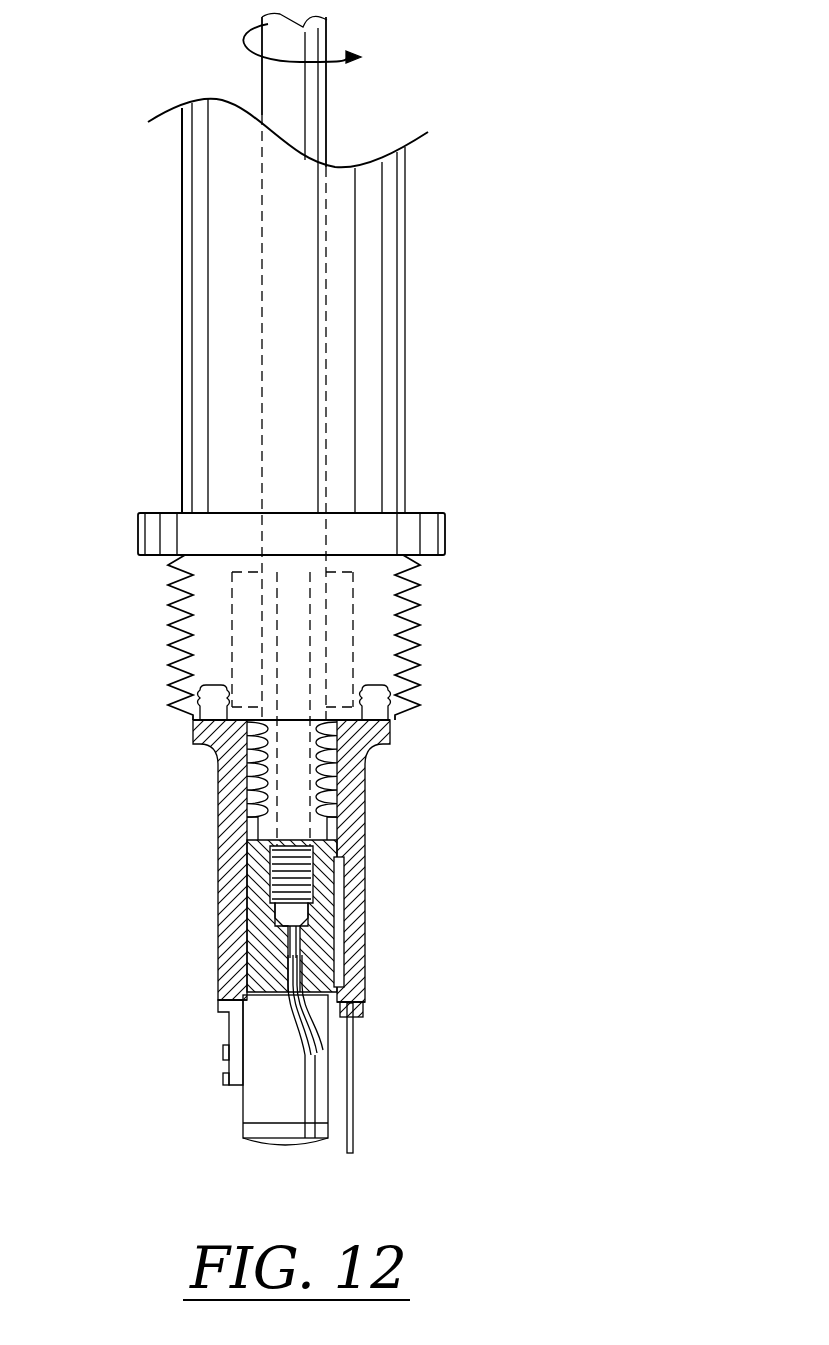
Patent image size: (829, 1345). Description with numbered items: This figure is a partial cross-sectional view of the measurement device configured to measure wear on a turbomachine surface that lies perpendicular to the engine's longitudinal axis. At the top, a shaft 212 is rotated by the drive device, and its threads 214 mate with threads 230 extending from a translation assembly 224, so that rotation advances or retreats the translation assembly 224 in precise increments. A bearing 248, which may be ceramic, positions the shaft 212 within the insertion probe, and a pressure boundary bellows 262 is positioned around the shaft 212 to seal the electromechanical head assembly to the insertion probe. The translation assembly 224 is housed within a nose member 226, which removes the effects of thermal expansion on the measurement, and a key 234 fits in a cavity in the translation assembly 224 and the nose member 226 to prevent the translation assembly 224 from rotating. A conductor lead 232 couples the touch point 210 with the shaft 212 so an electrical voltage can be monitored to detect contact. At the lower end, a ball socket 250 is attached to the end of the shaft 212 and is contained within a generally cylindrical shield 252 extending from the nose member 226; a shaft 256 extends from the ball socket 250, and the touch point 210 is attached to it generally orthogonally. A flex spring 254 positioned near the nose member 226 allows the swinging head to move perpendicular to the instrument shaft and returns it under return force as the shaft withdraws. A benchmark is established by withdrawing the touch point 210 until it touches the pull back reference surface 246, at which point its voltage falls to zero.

The touch point 210 is at (243, 1126).
The shaft 212 is at (318, 118).
The threads 214 is at (258, 858).
The translation assembly 224 is at (250, 920).
The nose member 226 is at (225, 973).
The threads 230 is at (262, 885).
The conductor lead 232 is at (232, 1012).
The key 234 is at (345, 905).
The pull back reference surface 246 is at (365, 985).
The bearing 248 is at (327, 642).
The ball socket 250 is at (323, 1040).
The shield 252 is at (352, 1114).
The spring 254 is at (228, 1062).
The shaft 256 is at (318, 1083).
The pressure boundary bellows 262 is at (330, 772).